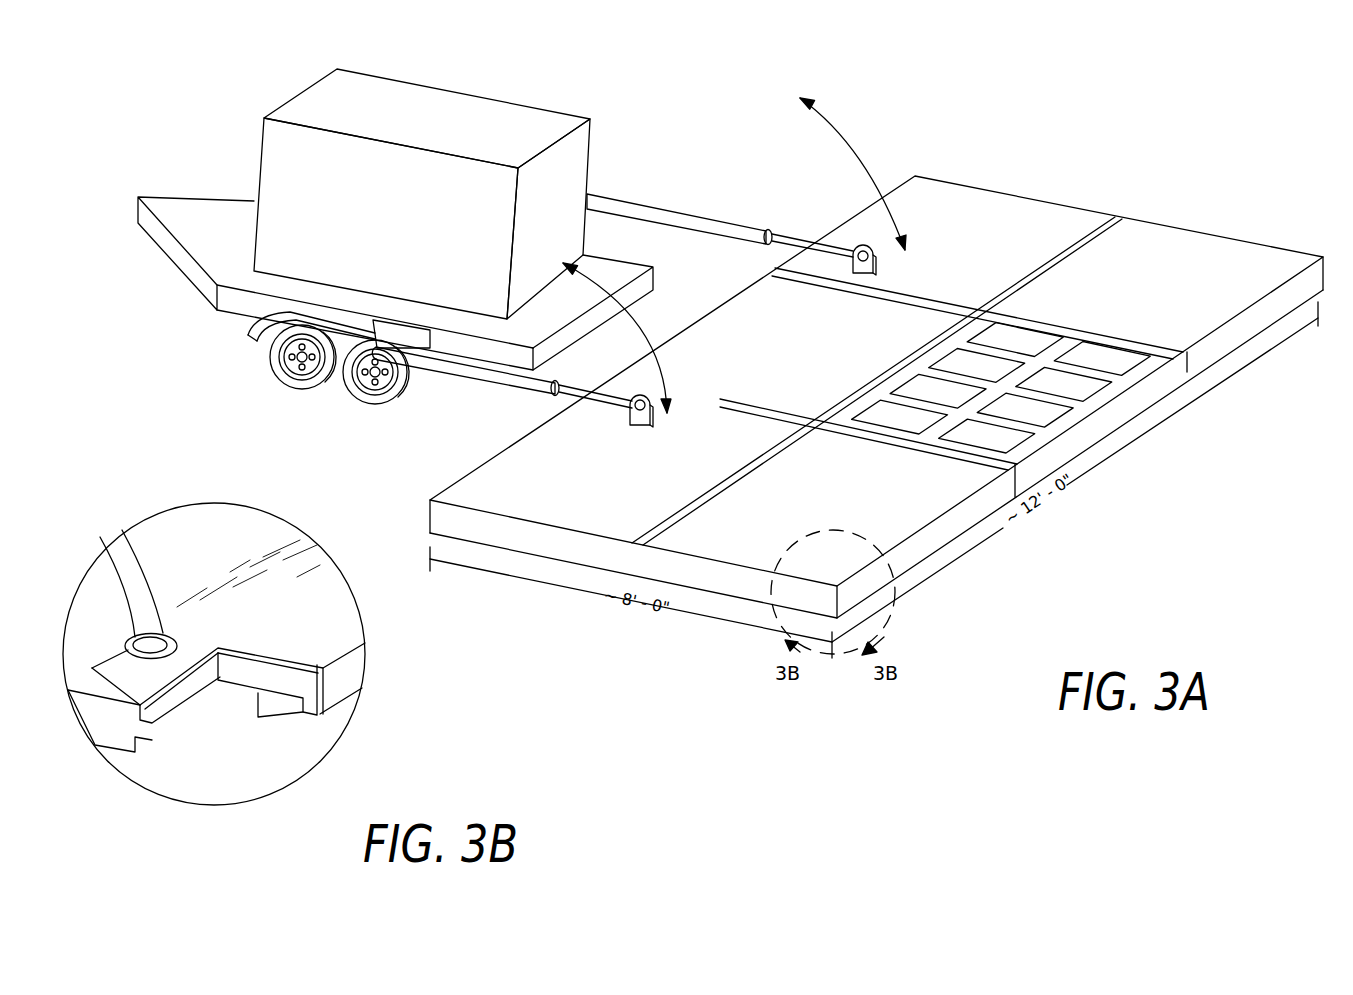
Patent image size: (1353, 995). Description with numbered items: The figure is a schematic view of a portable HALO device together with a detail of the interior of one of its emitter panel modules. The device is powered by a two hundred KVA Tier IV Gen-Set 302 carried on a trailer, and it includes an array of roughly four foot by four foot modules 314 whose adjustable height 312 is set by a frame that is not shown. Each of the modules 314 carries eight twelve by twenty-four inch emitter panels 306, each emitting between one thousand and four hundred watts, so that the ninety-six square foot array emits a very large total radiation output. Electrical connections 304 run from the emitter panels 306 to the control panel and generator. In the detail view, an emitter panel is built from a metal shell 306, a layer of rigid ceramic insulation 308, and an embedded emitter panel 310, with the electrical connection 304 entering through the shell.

In FIG. 3A, the Gen-Set 302 is at (293, 173).
In FIG. 3B, the electrical connection 304 is at (118, 653).
In FIG. 3A, the emitter panel 306 is at (1053, 445).
In FIG. 3B, the emitter panel 306 is at (328, 625).
In FIG. 3B, the rigid ceramic insulation 308 is at (292, 678).
In FIG. 3B, the embedded emitter panel 310 is at (258, 717).
In FIG. 3A, the adjustable height 312 is at (968, 167).
In FIG. 3A, the modules 314 is at (1063, 205).